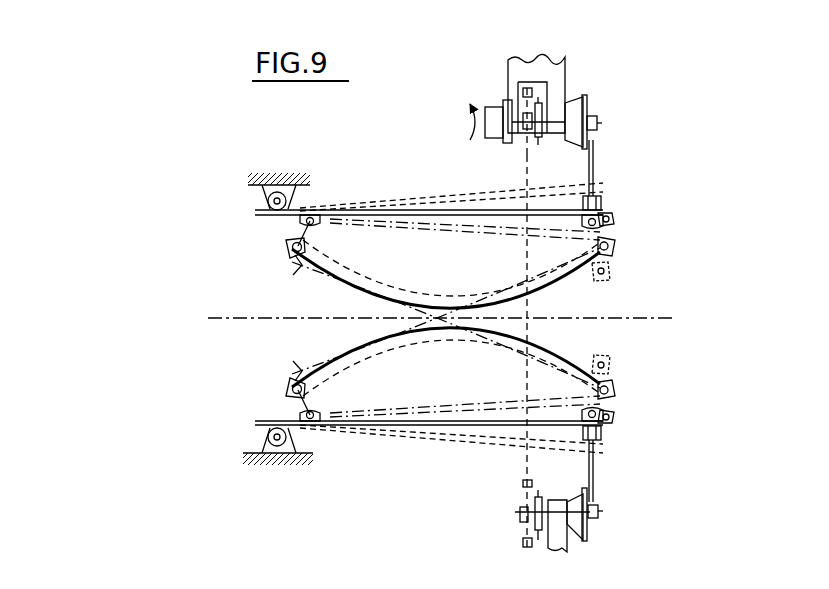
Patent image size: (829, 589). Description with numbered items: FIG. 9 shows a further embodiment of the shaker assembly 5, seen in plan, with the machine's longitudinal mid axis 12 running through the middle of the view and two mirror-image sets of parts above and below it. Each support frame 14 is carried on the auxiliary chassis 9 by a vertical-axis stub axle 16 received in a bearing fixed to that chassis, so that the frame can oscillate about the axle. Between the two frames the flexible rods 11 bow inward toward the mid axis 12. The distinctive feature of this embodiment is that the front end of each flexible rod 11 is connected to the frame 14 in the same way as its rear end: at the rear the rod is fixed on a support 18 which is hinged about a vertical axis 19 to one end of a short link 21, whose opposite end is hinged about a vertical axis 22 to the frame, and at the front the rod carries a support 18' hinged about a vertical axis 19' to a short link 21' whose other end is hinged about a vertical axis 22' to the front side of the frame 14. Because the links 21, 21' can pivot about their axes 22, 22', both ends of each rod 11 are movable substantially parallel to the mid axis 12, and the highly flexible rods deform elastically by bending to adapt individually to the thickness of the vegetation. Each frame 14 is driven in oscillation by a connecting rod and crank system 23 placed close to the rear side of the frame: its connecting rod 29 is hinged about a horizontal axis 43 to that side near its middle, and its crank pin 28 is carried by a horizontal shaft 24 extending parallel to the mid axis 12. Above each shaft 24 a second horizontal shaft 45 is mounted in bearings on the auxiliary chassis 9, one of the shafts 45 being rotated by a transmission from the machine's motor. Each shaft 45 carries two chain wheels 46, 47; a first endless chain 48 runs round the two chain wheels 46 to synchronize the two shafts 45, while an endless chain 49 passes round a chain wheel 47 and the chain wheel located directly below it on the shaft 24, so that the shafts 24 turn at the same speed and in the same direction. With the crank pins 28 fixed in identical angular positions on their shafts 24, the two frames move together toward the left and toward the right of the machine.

The shaker assembly 5 is at (245, 305).
The auxiliary chassis 9 is at (252, 186).
The flexible rod 11 is at (352, 352).
The longitudinal mid axis 12 is at (680, 318).
The support frame 14 is at (383, 208).
The stub axle 16 is at (268, 202).
The support 18 is at (631, 318).
The support 18' is at (285, 318).
The vertical axis 19 is at (637, 318).
The vertical axis 19' is at (266, 318).
The short link 21 is at (637, 318).
The short link 21' is at (332, 318).
The vertical axis 22 is at (628, 311).
The vertical axis 22' is at (274, 318).
The connecting rod and crank system 23 is at (634, 102).
The shaft 24 is at (568, 114).
The crank pin 28 is at (603, 122).
The connecting rod 29 is at (596, 150).
The horizontal axis 43 is at (604, 198).
The shaft 45 is at (505, 118).
The chain wheel 46 is at (523, 132).
The chain wheel 47 is at (543, 125).
The first endless chain 48 is at (527, 250).
The endless chain 49 is at (531, 82).